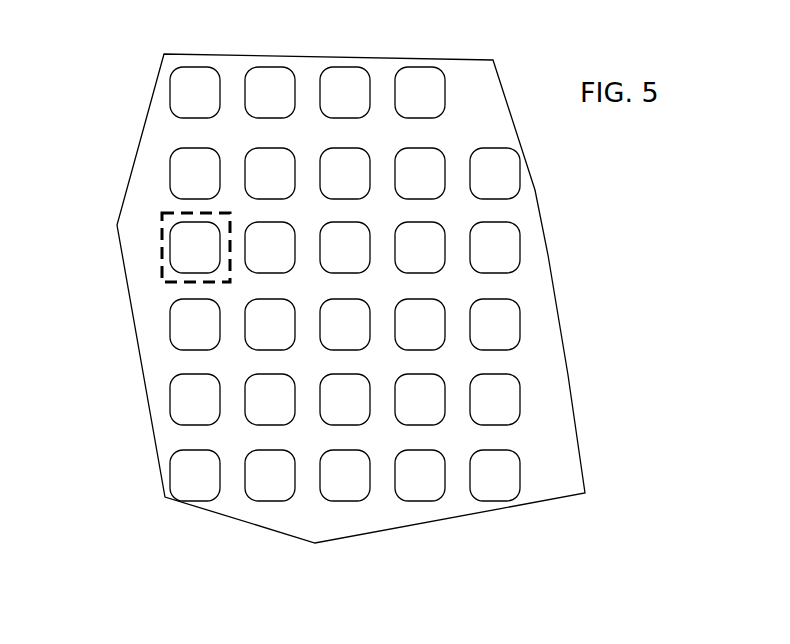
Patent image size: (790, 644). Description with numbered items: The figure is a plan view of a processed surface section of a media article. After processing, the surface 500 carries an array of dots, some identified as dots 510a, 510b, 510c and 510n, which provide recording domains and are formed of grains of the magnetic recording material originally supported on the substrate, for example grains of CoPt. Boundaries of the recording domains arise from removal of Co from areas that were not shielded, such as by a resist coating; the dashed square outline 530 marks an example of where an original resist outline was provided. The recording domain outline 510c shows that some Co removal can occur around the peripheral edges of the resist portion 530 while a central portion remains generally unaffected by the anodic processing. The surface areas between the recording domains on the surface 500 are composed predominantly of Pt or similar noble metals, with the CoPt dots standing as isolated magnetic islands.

The surface 500 is at (305, 523).
The dot 510a is at (170, 102).
The dot 510b is at (170, 167).
The recording domain outline 510c is at (170, 237).
The dot 510n is at (170, 463).
The dashed square outline 530 is at (162, 280).
The element CoPt is at (496, 241).
The element Pt is at (500, 285).